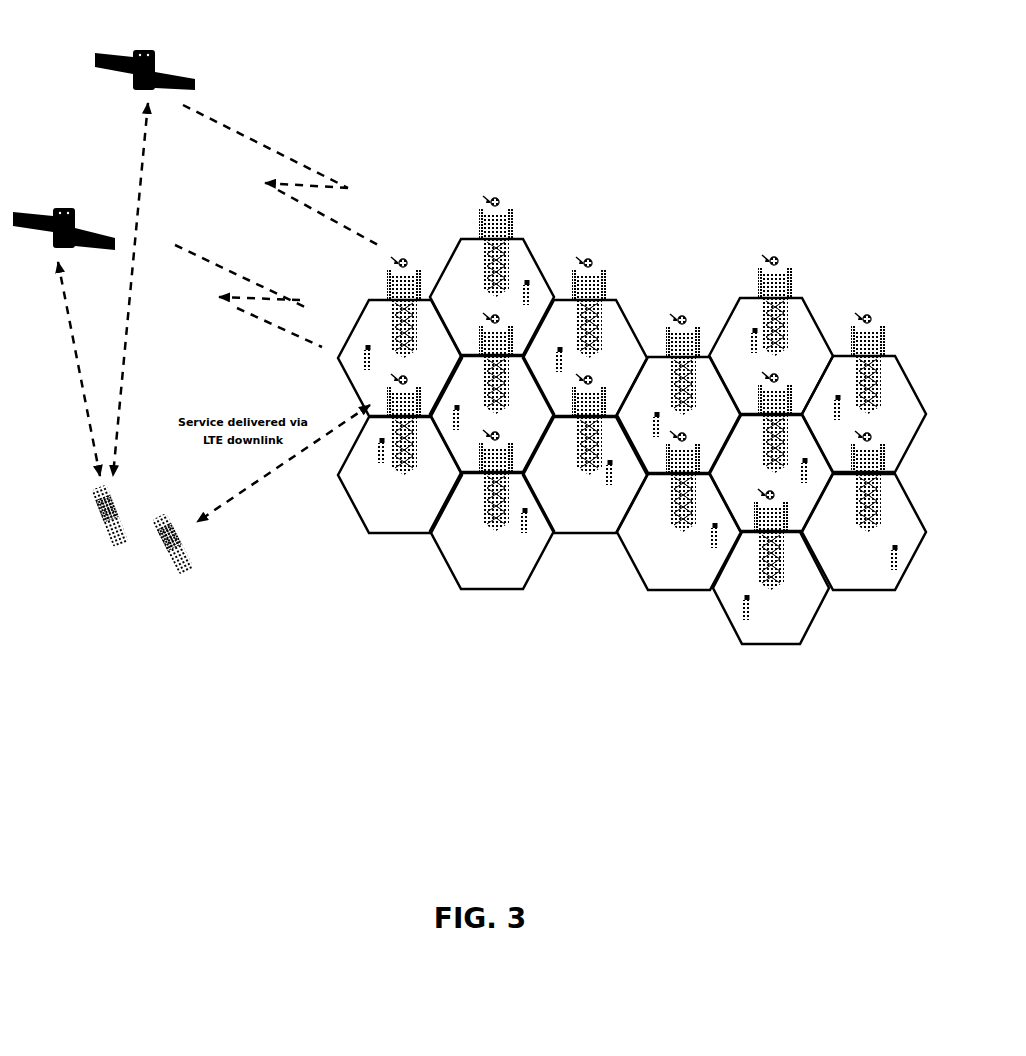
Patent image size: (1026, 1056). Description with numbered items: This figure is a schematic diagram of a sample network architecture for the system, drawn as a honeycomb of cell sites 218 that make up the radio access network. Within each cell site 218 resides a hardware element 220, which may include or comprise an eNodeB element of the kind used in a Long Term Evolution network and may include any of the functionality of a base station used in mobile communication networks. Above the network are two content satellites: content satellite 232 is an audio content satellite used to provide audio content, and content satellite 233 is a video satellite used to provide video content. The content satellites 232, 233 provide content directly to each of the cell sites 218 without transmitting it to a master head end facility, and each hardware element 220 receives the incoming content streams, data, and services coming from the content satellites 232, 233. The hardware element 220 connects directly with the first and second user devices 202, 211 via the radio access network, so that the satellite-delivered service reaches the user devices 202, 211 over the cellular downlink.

The content satellite 233 is at (180, 73).
The content satellite 232 is at (25, 226).
The first user device 202 is at (112, 543).
The second user device 211 is at (175, 575).
The hardware element 220 is at (300, 553).
The cell site 218 is at (867, 680).